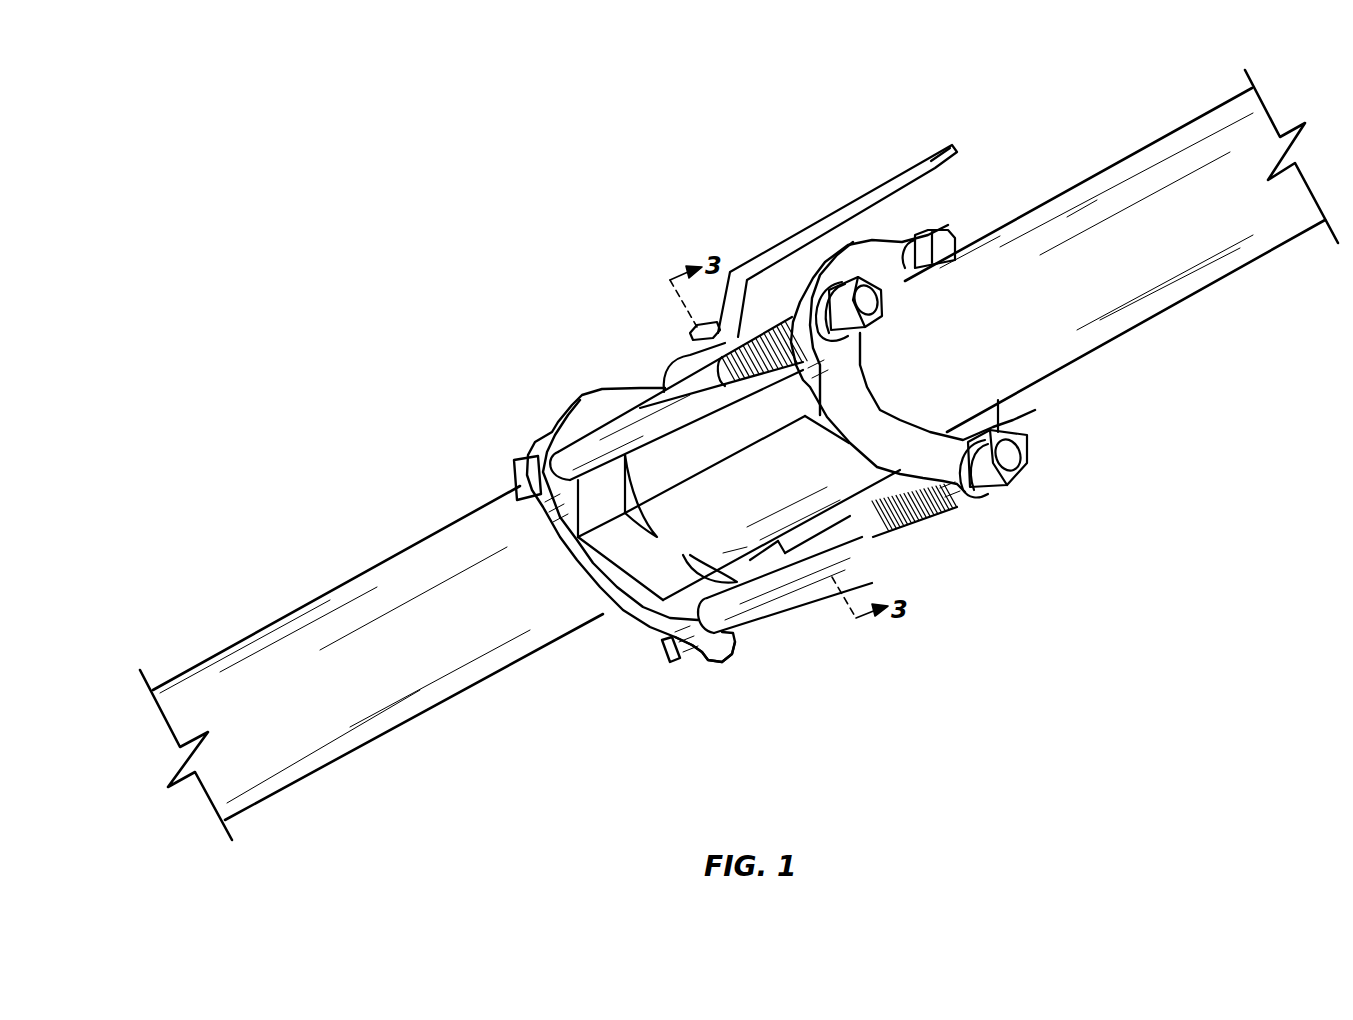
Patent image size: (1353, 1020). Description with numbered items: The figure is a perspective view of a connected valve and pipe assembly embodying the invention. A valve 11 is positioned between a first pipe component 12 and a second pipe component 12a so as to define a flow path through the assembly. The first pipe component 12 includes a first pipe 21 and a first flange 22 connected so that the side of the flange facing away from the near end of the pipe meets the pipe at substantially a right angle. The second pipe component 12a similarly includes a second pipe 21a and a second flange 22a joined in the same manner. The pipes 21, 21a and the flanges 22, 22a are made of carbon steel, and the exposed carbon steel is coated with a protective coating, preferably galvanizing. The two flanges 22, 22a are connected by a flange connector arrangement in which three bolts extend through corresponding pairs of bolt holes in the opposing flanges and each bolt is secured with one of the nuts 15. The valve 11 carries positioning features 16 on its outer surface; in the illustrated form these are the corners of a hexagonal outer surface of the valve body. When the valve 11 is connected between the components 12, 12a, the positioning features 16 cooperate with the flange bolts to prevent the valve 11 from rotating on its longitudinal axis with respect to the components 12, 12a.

The valve 11 is at (700, 442).
The first pipe component 12 is at (1203, 99).
The second pipe component 12a is at (273, 590).
The nuts 15 is at (1050, 497).
The positioning features 16 is at (598, 502).
The first pipe 21 is at (1197, 247).
The second pipe 21a is at (315, 730).
The first flange 22 is at (988, 417).
The second flange 22a is at (653, 627).